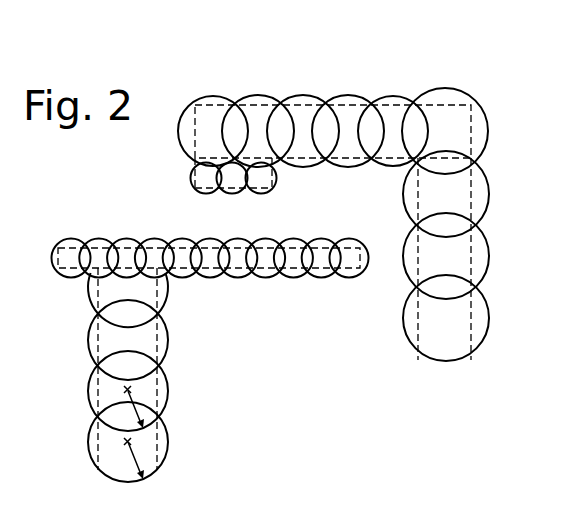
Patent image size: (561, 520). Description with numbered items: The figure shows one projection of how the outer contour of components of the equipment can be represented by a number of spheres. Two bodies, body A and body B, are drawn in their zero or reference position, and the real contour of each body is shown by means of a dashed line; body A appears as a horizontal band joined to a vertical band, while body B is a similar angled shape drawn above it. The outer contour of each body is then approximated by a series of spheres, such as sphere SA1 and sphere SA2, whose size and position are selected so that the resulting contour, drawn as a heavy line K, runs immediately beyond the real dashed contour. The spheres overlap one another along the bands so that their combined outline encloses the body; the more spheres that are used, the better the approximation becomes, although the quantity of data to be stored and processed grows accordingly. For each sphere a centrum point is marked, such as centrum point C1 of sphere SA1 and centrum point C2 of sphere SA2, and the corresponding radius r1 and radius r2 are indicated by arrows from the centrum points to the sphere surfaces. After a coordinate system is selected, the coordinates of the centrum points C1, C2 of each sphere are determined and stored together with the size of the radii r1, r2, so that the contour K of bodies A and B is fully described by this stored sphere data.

The body A is at (87, 228).
The body B is at (238, 87).
The heavy line K is at (168, 337).
The sphere SA1 is at (168, 445).
The sphere SA2 is at (167, 384).
The centrum point C1 is at (124, 442).
The centrum point C2 is at (124, 390).
The radius r1 is at (166, 470).
The radius r2 is at (160, 404).